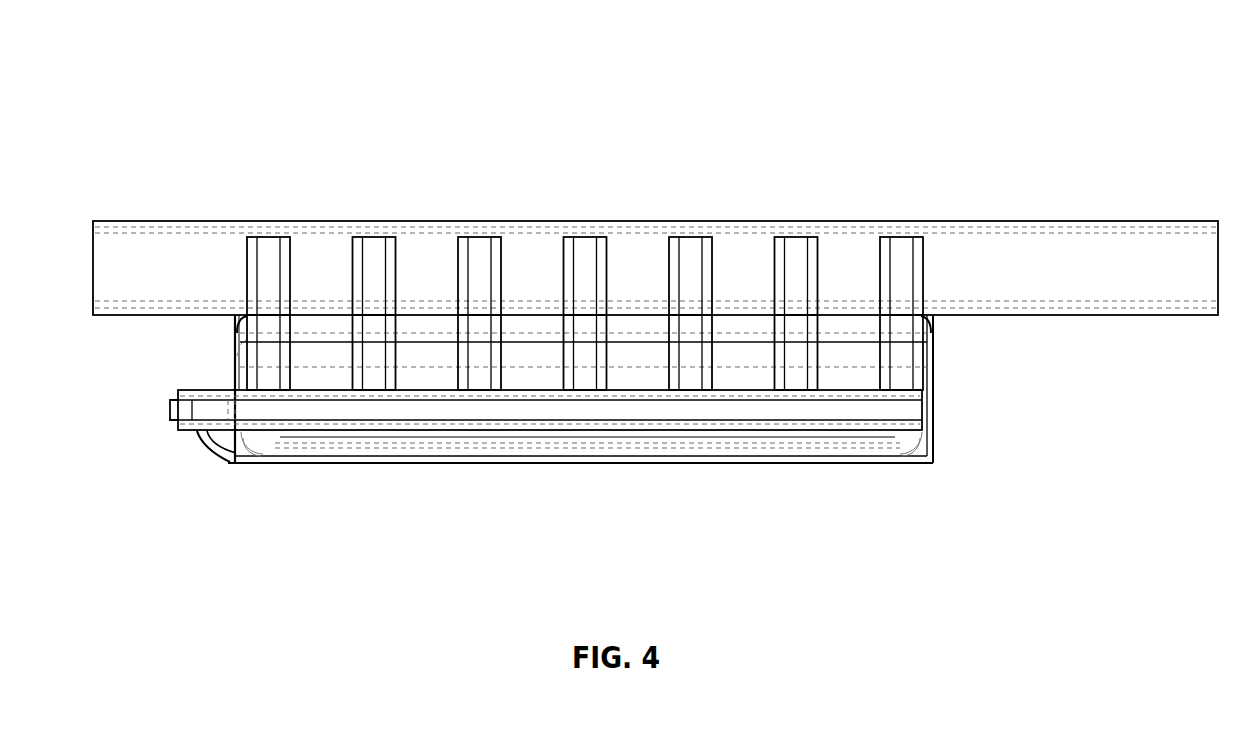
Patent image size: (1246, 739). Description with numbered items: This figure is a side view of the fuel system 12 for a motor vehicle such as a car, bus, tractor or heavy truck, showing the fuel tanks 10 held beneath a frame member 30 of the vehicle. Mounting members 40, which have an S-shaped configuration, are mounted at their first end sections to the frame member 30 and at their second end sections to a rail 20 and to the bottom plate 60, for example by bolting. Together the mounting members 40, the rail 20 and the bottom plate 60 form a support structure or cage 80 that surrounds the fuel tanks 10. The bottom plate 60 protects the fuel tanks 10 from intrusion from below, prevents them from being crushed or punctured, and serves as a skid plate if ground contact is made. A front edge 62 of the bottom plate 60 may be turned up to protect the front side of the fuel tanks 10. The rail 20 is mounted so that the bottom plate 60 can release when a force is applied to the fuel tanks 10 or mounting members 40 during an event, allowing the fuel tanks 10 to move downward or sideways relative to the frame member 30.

The fuel tank 10 is at (231, 344).
The fuel system 12 is at (642, 137).
The rail 20 is at (876, 435).
The frame member 30 is at (853, 220).
The mounting member 40 is at (371, 238).
The bottom plate 60 is at (315, 472).
The front edge 62 is at (208, 448).
The support structure or cage 80 is at (592, 478).